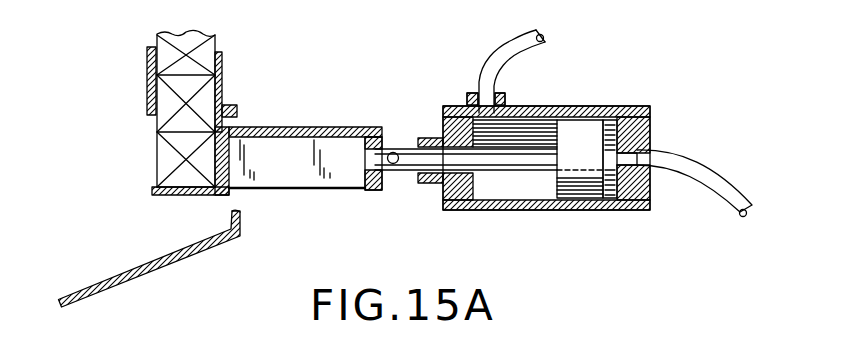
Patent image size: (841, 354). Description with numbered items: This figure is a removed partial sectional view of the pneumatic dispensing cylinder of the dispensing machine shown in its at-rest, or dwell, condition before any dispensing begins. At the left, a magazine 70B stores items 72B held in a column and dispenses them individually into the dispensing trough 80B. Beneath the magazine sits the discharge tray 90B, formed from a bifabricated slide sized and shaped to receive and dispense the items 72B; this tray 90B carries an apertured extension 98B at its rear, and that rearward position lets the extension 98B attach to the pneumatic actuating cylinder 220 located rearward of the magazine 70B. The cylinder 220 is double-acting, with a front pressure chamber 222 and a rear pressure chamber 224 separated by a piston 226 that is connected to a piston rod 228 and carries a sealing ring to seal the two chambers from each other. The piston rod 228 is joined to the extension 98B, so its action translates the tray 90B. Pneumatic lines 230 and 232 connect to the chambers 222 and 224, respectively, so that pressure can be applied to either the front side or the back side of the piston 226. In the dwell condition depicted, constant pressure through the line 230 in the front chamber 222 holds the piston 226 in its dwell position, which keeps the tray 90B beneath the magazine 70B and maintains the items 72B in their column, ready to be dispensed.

The magazine 70B is at (153, 73).
The items 72B is at (165, 162).
The dispensing trough 80B is at (140, 267).
The discharge tray 90B is at (297, 128).
The apertured extension 98B is at (393, 152).
The pneumatic actuating cylinder 220 is at (553, 98).
The front pressure chamber 222 is at (447, 187).
The rear pressure chamber 224 is at (612, 190).
The piston 226 is at (587, 133).
The piston rod 228 is at (508, 157).
The pneumatic line 230 is at (502, 50).
The pneumatic line 232 is at (707, 170).